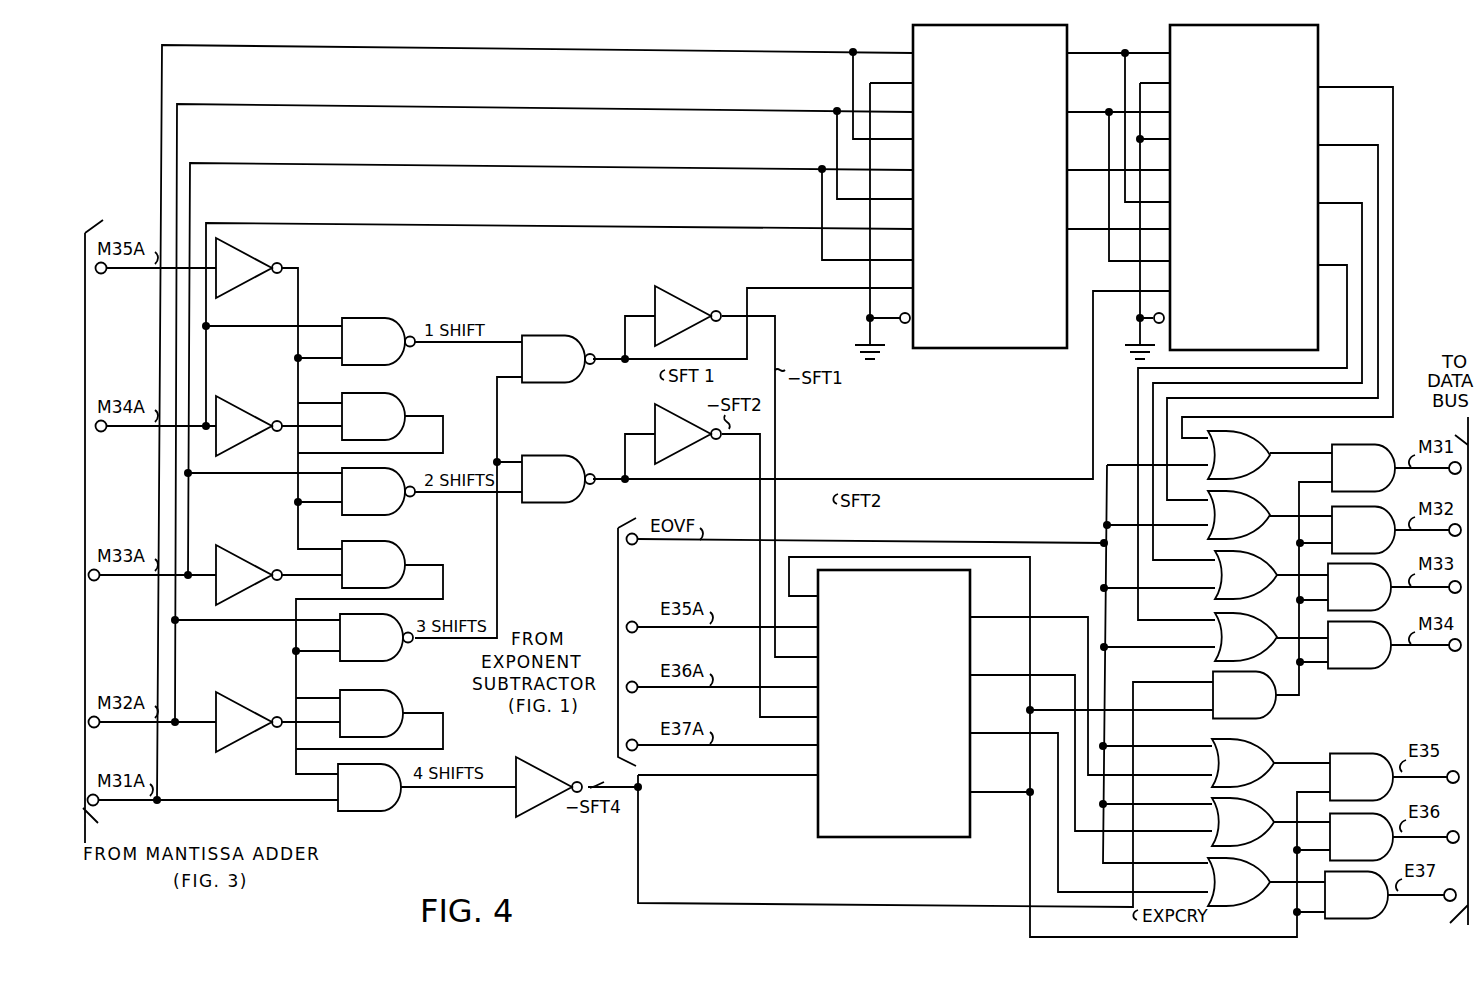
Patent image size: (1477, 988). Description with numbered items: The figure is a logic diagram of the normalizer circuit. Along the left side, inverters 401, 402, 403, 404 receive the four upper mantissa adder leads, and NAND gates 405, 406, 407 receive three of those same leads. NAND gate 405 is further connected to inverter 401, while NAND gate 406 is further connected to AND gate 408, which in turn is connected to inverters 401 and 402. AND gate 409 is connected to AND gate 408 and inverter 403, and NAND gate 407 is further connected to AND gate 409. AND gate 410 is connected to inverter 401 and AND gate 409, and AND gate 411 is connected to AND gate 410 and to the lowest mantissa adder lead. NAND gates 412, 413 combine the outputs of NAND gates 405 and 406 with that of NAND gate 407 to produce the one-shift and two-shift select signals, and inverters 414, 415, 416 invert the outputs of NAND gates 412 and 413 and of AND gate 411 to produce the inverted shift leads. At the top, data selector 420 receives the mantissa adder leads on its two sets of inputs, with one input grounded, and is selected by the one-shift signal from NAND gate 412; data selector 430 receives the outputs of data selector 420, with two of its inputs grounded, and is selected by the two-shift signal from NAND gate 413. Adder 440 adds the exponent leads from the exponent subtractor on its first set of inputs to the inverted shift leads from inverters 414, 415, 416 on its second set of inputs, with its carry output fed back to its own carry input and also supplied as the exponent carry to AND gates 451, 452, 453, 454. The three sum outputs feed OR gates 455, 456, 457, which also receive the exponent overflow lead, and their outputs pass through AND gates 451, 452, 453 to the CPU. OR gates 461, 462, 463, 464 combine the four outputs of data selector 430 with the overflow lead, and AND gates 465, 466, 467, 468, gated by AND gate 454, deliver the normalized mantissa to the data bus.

The inverter 401 is at (263, 238).
The inverter 402 is at (259, 396).
The inverter 403 is at (246, 538).
The inverter 404 is at (241, 683).
The NAND gate 405 is at (389, 316).
The NAND gate 406 is at (397, 514).
The NAND gate 407 is at (394, 660).
The AND gate 408 is at (399, 381).
The AND gate 409 is at (406, 539).
The AND gate 410 is at (401, 686).
The AND gate 411 is at (390, 810).
The NAND gate 412 is at (569, 318).
The NAND gate 413 is at (569, 443).
The inverter 414 is at (691, 279).
The inverter 415 is at (690, 450).
The inverter 416 is at (548, 756).
The data selector 420 is at (972, 216).
The data selector 430 is at (1228, 226).
The adder 440 is at (867, 770).
The AND gate 451 is at (1345, 754).
The AND gate 452 is at (1387, 847).
The AND gate 453 is at (1383, 911).
The AND gate 454 is at (1268, 709).
The OR gate 455 is at (1276, 739).
The OR gate 456 is at (1258, 788).
The OR gate 457 is at (1236, 909).
The OR gate 461 is at (1258, 423).
The OR gate 462 is at (1258, 481).
The OR gate 463 is at (1253, 543).
The OR gate 464 is at (1254, 606).
The AND gate 465 is at (1378, 433).
The AND gate 466 is at (1379, 498).
The AND gate 467 is at (1370, 609).
The AND gate 468 is at (1373, 671).